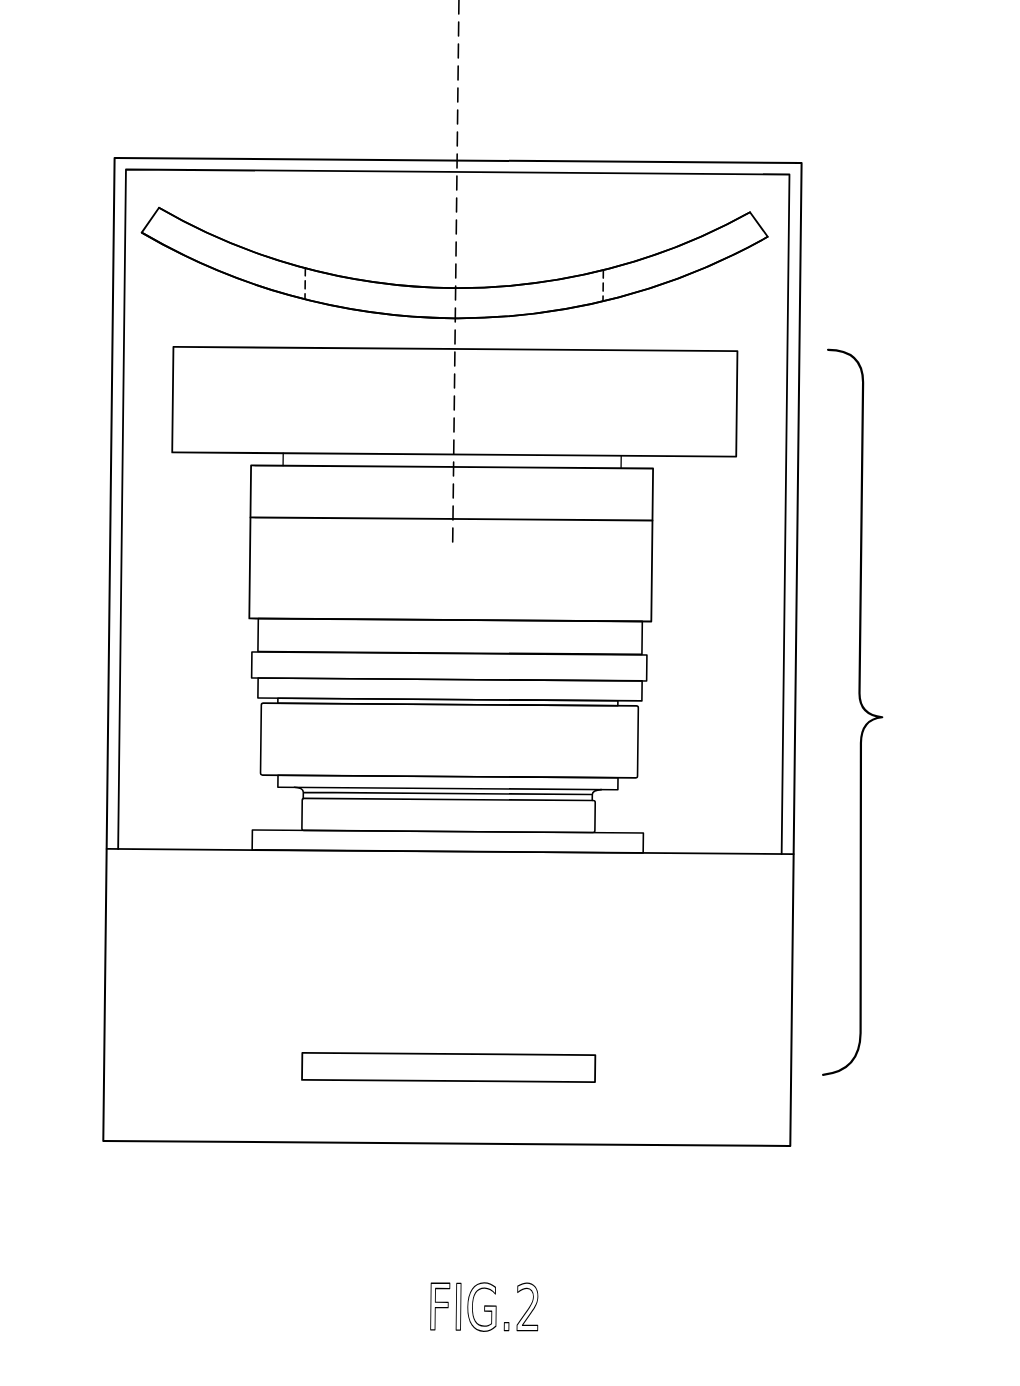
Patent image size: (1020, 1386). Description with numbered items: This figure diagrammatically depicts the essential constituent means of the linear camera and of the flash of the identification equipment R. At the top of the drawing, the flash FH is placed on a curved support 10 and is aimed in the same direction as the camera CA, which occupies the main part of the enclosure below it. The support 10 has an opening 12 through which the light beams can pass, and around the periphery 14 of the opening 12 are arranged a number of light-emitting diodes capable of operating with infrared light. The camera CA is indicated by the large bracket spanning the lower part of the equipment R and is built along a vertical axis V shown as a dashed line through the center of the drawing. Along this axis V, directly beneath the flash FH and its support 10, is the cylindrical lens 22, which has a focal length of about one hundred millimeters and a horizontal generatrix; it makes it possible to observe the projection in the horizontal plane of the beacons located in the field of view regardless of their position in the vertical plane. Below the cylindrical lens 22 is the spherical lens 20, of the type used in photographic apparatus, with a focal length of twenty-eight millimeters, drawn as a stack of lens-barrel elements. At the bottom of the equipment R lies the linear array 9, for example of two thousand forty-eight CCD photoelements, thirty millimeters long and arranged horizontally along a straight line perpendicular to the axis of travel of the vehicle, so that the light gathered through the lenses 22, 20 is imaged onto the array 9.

The vertical axis V is at (458, 42).
The opening 12 is at (561, 295).
The flash FH is at (745, 231).
The support 10 is at (193, 263).
The periphery 14 is at (613, 287).
The cylindrical lens 22 is at (168, 412).
The spherical lens 20 is at (249, 577).
The camera CA is at (873, 713).
The linear array 9 is at (352, 1079).
The identification equipment R is at (648, 1147).